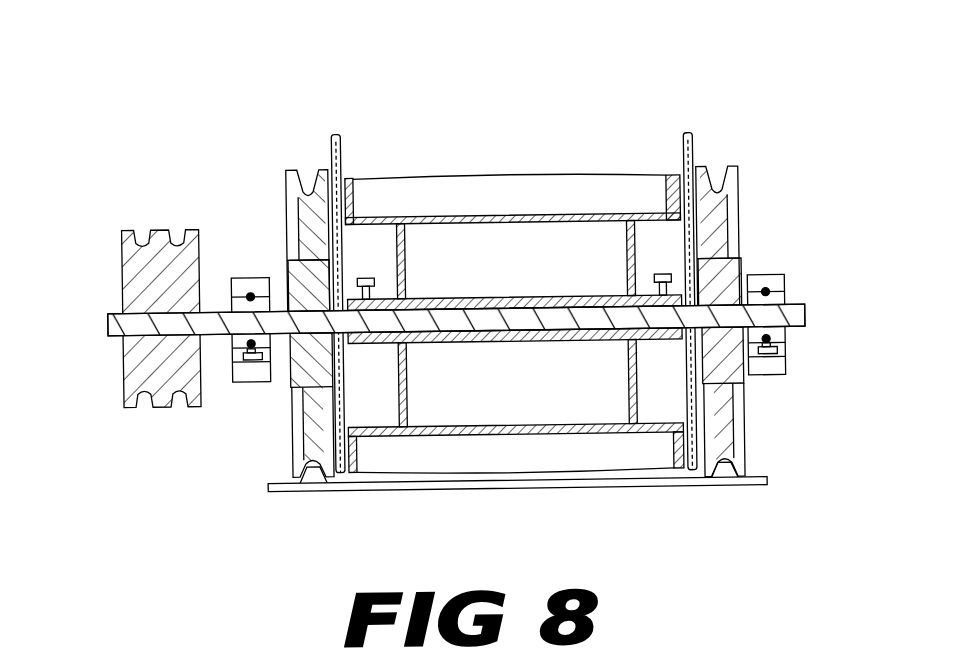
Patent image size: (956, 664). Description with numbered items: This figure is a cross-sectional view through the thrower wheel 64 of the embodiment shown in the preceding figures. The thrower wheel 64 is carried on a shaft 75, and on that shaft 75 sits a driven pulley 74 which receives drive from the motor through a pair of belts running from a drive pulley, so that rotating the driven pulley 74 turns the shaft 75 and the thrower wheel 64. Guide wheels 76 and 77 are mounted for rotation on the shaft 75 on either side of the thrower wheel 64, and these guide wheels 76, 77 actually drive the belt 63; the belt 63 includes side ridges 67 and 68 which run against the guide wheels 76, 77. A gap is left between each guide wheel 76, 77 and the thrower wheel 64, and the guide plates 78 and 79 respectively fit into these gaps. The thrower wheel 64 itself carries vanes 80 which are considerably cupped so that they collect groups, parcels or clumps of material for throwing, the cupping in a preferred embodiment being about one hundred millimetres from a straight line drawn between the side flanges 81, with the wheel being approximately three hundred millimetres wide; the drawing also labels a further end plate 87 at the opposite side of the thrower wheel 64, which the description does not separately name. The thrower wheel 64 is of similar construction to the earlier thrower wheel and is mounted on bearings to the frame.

The belt 63 is at (373, 487).
The thrower wheel 64 is at (513, 284).
The side ridge 67 is at (721, 476).
The side ridge 68 is at (306, 480).
The driven pulley 74 is at (129, 275).
The shaft 75 is at (115, 318).
The guide wheel 76 is at (744, 199).
The guide wheel 77 is at (299, 213).
The guide plate 78 is at (698, 143).
The guide plate 79 is at (345, 141).
The vane 80 is at (477, 190).
The side flange 81 is at (360, 181).
The right end plate 87 is at (670, 183).